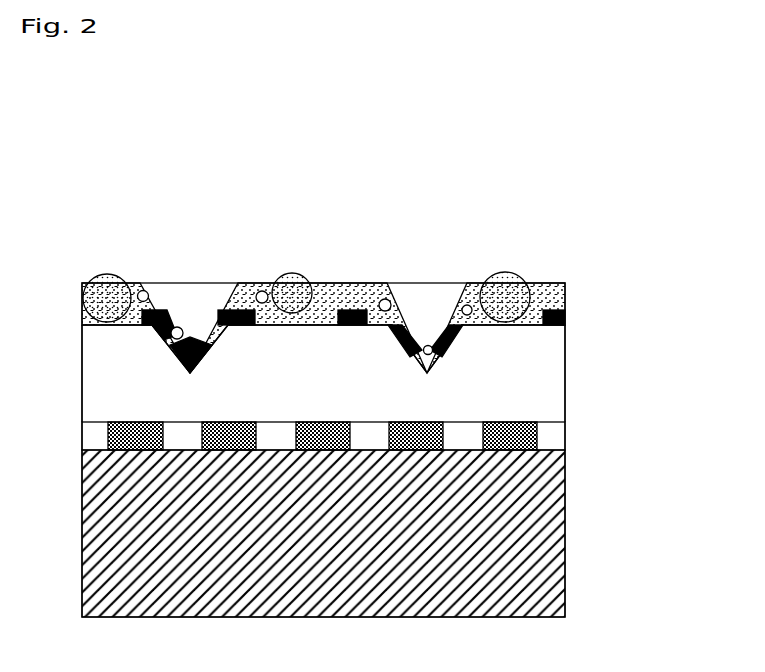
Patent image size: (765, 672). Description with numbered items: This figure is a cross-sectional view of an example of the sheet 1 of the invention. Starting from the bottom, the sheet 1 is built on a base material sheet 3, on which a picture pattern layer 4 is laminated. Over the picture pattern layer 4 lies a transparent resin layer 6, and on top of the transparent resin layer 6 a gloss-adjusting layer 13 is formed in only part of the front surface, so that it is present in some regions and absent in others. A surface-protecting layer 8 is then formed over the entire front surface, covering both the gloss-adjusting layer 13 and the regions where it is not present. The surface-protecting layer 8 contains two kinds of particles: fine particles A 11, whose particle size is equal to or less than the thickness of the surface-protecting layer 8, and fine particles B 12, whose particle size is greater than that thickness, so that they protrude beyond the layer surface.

The sheet 1 is at (363, 214).
The base material sheet 3 is at (535, 537).
The picture pattern layer 4 is at (538, 438).
The transparent resin layer 6 is at (523, 395).
The surface-protecting layer 8 is at (565, 293).
The fine particles A 11 is at (143, 290).
The fine particles B 12 is at (293, 283).
The gloss-adjusting layer 13 is at (565, 320).